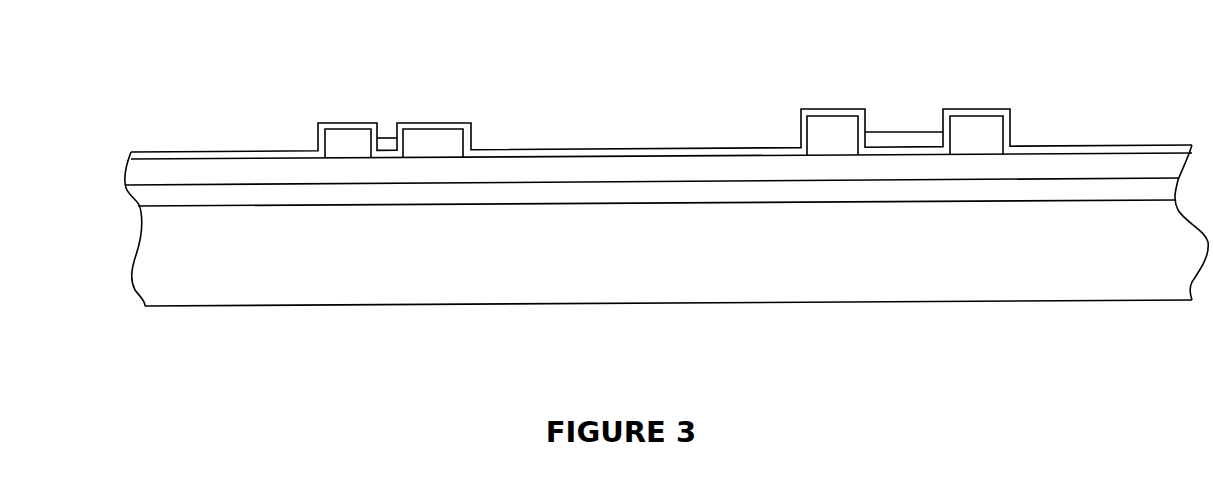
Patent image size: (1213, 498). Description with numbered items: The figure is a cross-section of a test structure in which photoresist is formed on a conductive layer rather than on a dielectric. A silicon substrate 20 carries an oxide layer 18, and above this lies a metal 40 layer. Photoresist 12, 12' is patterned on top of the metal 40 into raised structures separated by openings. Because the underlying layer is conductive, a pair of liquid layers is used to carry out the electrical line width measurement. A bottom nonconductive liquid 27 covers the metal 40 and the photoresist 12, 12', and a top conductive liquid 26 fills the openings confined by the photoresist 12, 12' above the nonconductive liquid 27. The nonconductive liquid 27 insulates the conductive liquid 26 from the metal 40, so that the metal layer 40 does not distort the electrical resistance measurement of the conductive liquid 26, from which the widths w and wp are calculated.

The photoresist 12 is at (394, 108).
The photoresist 12' is at (910, 105).
The oxide layer 18 is at (653, 190).
The silicon substrate 20 is at (1148, 285).
The conductive liquid 26 is at (385, 138).
The nonconductive liquid 27 is at (388, 158).
The metal 40 is at (585, 167).